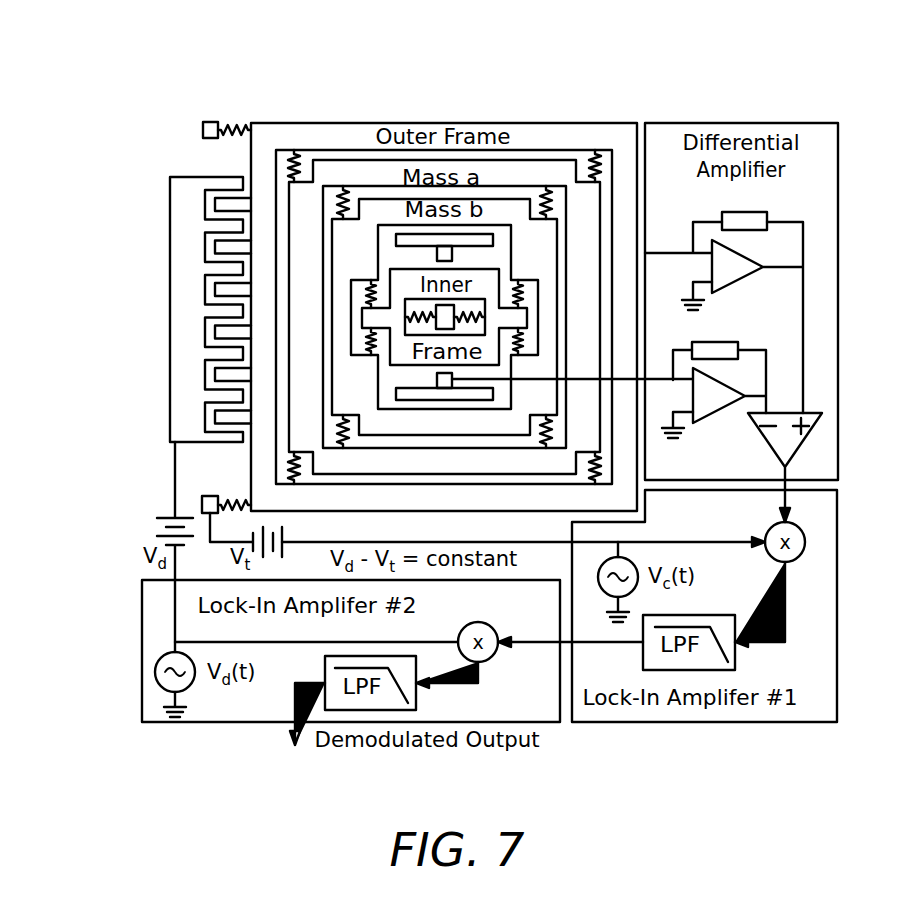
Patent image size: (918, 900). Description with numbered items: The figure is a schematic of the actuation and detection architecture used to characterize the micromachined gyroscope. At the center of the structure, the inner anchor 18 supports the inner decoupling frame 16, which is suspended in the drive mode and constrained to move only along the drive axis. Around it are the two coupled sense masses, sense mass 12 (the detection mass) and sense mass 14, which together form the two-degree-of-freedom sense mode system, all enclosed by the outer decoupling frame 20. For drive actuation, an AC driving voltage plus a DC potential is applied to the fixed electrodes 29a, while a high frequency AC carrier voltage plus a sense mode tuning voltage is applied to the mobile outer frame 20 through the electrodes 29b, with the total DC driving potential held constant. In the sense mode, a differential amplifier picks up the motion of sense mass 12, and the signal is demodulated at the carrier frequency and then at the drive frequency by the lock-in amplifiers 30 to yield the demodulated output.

The sense mass m_b 12 is at (380, 207).
The sense mass m_a 14 is at (527, 172).
The inner decoupling frame 16 is at (393, 318).
The inner anchor 18 is at (437, 312).
The outer decoupling frame 20 is at (572, 128).
The fixed electrodes 29a is at (173, 312).
The electrodes 29b is at (218, 422).
The lock-in amplifiers 30 is at (737, 662).